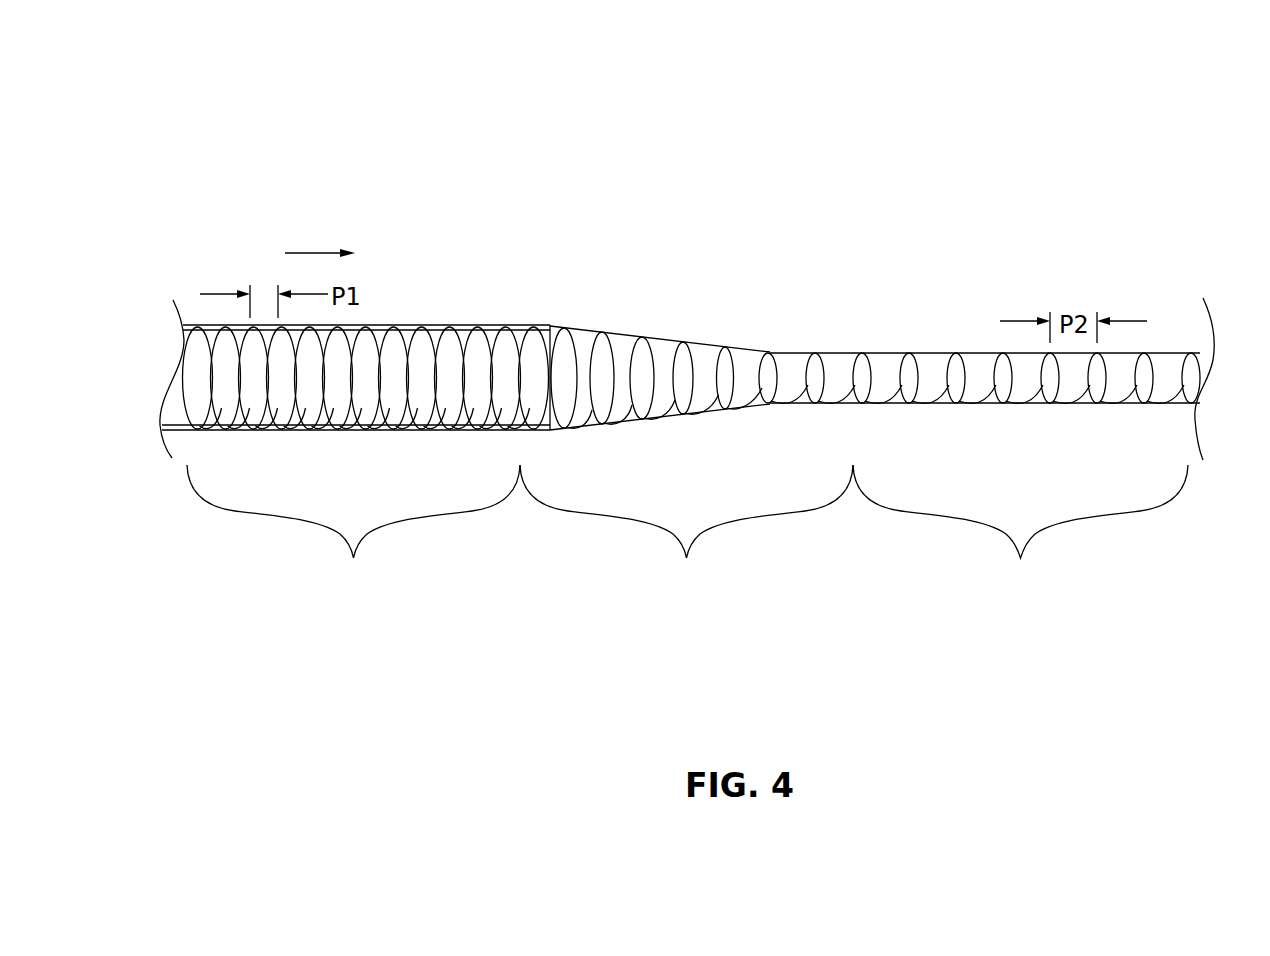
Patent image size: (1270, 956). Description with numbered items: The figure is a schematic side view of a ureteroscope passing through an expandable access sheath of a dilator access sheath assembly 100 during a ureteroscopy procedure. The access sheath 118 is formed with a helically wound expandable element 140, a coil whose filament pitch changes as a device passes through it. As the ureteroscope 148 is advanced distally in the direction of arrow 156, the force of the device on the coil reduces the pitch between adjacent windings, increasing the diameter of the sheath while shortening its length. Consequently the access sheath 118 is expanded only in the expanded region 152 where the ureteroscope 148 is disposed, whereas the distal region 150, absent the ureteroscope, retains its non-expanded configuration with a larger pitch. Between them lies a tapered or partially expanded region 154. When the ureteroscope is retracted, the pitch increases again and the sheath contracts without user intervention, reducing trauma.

The dilator access sheath assembly 100 is at (704, 331).
The access sheath 118 is at (953, 352).
The expandable element 140 is at (645, 343).
The ureteroscope 148 is at (549, 325).
The distal region 150 is at (979, 472).
The expanded region 152 is at (356, 458).
The tapered or partially expanded region 154 is at (686, 458).
The arrow 156 is at (306, 252).